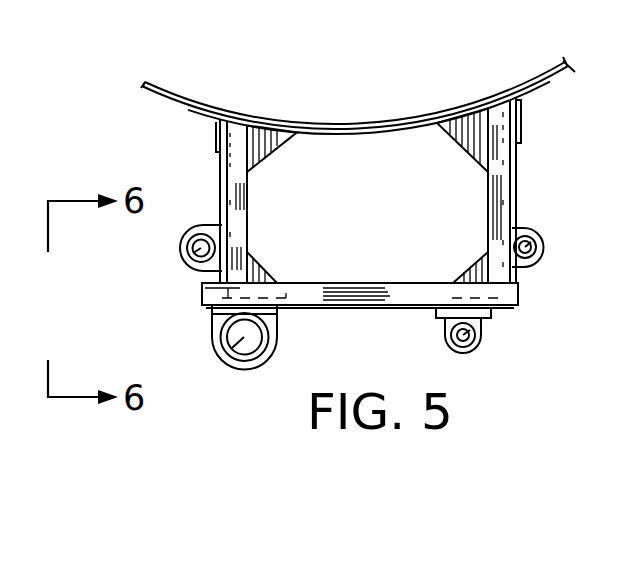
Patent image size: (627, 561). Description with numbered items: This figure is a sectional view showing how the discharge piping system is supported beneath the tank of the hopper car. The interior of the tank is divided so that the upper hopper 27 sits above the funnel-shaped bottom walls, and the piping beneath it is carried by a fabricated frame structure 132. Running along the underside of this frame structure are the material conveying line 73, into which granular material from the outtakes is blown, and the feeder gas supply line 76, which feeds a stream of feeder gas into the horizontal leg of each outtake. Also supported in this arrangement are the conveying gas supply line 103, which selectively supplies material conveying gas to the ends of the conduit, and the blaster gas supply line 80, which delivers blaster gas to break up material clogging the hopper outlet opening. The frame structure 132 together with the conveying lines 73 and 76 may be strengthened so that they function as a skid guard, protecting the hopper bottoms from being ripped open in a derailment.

The upper hopper 27 is at (160, 103).
The fabricated frame structure 132 is at (532, 166).
The conveying gas supply line 103 is at (178, 257).
The blaster gas supply line 80 is at (545, 255).
The material conveying line 73 is at (222, 342).
The feeder gas supply line 76 is at (480, 337).